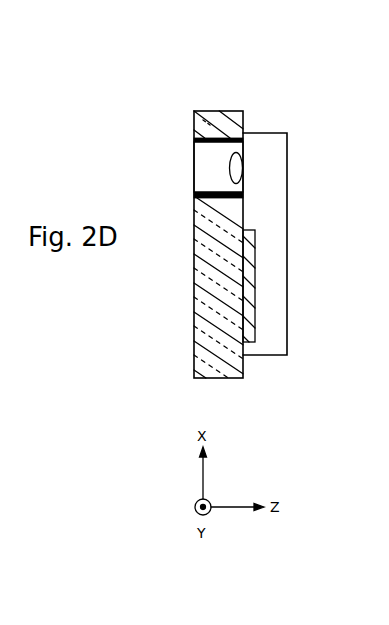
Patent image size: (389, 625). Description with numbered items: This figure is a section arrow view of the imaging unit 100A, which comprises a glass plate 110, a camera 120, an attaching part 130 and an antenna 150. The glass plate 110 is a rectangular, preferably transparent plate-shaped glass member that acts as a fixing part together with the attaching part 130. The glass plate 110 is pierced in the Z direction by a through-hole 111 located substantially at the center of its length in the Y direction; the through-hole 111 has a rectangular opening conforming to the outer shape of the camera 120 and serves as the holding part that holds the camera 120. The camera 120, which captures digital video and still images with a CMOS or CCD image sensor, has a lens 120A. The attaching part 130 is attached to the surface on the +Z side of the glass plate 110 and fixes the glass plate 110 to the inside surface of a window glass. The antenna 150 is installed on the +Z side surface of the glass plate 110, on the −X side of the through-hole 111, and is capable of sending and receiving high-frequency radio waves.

The imaging unit 100A is at (337, 64).
The glass plate 110 is at (194, 341).
The through-hole 111 is at (249, 193).
The camera 120 is at (202, 167).
The lens 120A is at (243, 168).
The attaching part 130 is at (272, 146).
The antenna 150 is at (256, 285).